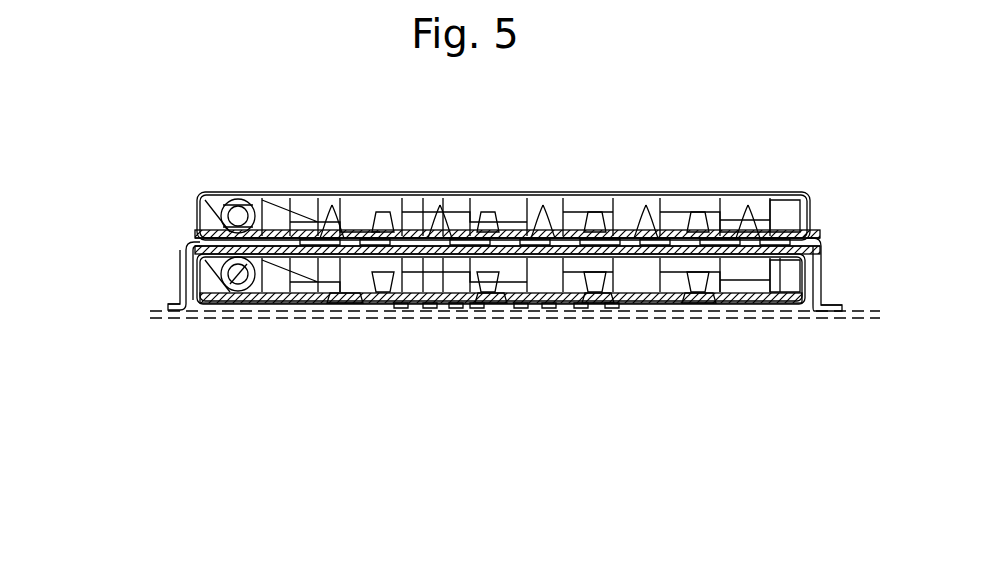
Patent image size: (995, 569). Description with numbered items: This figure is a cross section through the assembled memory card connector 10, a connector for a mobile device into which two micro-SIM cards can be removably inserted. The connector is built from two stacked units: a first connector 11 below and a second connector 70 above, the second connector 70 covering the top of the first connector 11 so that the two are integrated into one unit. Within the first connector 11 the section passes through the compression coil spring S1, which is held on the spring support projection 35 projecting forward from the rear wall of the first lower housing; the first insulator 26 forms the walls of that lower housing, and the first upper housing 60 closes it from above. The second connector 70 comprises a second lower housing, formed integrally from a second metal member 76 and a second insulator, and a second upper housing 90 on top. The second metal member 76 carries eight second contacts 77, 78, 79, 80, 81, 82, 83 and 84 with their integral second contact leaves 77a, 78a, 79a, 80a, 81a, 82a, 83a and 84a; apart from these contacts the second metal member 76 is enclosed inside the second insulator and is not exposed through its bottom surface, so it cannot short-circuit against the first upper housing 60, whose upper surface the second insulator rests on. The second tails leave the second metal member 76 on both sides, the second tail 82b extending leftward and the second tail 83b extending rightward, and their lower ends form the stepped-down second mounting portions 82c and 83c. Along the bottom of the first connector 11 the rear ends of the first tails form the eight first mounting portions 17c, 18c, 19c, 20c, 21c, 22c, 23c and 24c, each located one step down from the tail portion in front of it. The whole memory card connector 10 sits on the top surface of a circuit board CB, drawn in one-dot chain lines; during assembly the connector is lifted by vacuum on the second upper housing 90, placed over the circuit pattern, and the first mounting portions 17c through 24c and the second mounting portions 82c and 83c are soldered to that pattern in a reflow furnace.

The memory card connector 10 is at (107, 153).
The second connector 70 is at (198, 207).
The first connector 11 is at (188, 284).
The spring support projection 35 is at (242, 212).
The compression coil spring S1 is at (250, 224).
The second metal member 76 is at (748, 205).
The second contact 81 is at (381, 211).
The second contact leaf 81a is at (385, 230).
The second contact 82 is at (486, 211).
The second contact leaf 82a is at (490, 230).
The second contact 83 is at (591, 211).
The second contact leaf 83a is at (596, 230).
The second contact 84 is at (696, 211).
The second contact leaf 84a is at (699, 230).
The second upper housing 90 is at (787, 192).
The first upper housing 60 is at (806, 238).
The second tail 82b is at (186, 300).
The second mounting portion 82c is at (176, 310).
The second tail 83b is at (822, 290).
The second mounting portion 83c is at (836, 312).
The second contact 77 is at (346, 329).
The second contact leaf 77a is at (345, 302).
The second contact 78 is at (514, 352).
The second contact leaf 78a is at (492, 306).
The second contact 79 is at (622, 352).
The second contact leaf 79a is at (597, 306).
The second contact 80 is at (720, 329).
The second contact leaf 80a is at (700, 302).
The first mounting portion 17c is at (401, 304).
The first mounting portion 18c is at (456, 304).
The first mounting portion 19c is at (521, 304).
The first mounting portion 20c is at (581, 304).
The first mounting portion 21c is at (430, 304).
The first mounting portion 22c is at (477, 304).
The first mounting portion 23c is at (549, 304).
The first mounting portion 24c is at (612, 304).
The first insulator 26 is at (796, 302).
The circuit board CB is at (858, 320).